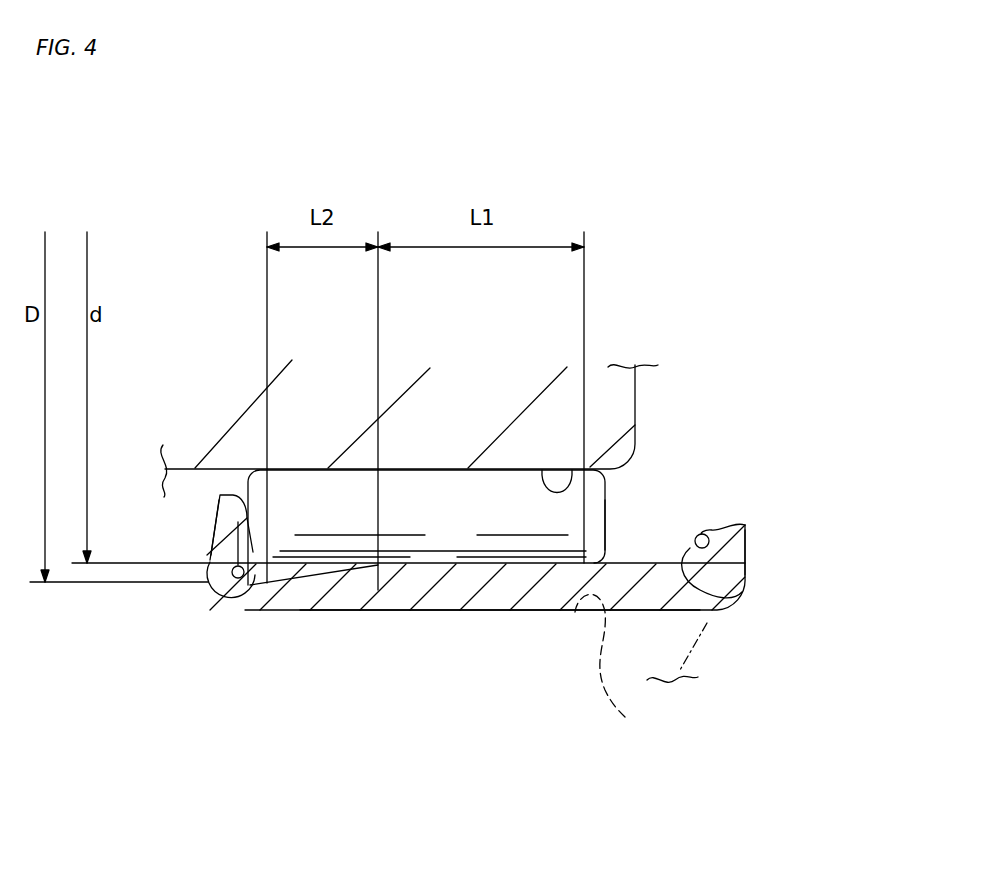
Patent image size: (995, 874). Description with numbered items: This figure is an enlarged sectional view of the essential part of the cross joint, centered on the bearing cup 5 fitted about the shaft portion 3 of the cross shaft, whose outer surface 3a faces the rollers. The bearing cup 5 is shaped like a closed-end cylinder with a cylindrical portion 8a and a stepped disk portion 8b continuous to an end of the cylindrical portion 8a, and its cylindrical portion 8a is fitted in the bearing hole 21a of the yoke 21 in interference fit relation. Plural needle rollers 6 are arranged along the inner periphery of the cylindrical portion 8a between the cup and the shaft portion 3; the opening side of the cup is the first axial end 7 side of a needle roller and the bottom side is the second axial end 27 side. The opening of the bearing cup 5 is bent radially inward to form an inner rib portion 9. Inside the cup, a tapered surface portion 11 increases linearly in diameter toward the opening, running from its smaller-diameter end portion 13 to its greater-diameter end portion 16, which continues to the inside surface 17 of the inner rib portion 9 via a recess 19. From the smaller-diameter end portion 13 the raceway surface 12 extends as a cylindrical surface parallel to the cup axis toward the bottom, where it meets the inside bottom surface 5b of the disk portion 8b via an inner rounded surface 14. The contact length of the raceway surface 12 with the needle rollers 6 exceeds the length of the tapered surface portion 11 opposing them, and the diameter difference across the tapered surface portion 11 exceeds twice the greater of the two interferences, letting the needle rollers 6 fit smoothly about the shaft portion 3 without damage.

The shaft portion 3 is at (635, 397).
The plate surface 3a is at (572, 465).
The bearing cup 5 is at (737, 600).
The inside bottom surface 5b is at (745, 563).
The needle rollers 6 is at (428, 500).
The first axial end 7 is at (283, 520).
The cylindrical portion 8a is at (517, 612).
The stepped disk portion 8b is at (745, 543).
The inner rib portion 9 is at (212, 540).
The tapered surface portion 11 is at (310, 578).
The raceway surface 12 is at (488, 563).
The smaller-diameter end portion 13 is at (378, 567).
The inner rounded surface 14 is at (733, 605).
The greater-diameter end portion 16 is at (247, 524).
The inside surface 17 is at (230, 610).
The recess 19 is at (213, 594).
The yoke 21 is at (697, 637).
The bearing hole 21a is at (622, 672).
The second axial end 27 is at (568, 512).